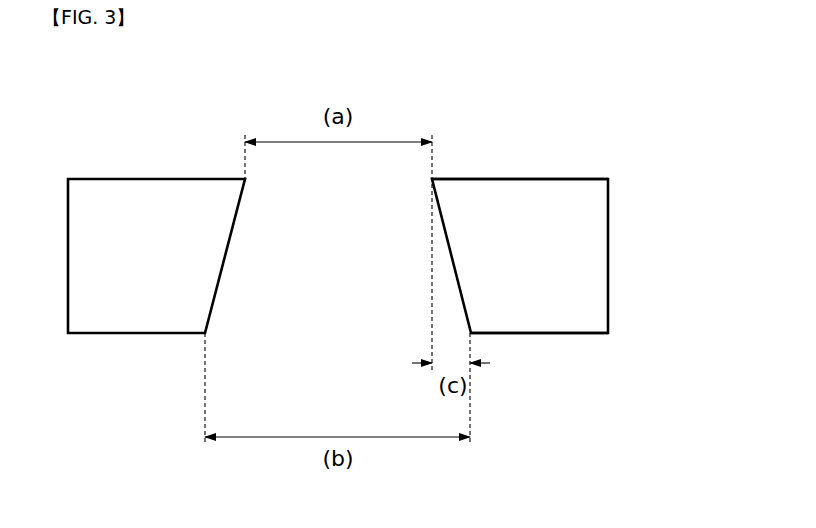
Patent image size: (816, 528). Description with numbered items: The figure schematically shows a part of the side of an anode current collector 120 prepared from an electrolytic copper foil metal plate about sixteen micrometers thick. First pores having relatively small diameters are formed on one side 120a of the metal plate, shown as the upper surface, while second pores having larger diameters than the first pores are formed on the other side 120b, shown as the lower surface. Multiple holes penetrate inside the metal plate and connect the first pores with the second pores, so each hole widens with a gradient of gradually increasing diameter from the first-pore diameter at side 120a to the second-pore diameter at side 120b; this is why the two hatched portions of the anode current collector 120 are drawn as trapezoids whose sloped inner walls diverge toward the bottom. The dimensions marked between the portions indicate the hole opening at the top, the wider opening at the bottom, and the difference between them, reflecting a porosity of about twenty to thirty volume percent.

The anode current collector 120 is at (618, 179).
The one side of the metal plate 120a is at (545, 179).
The other side of the metal plate 120b is at (545, 333).